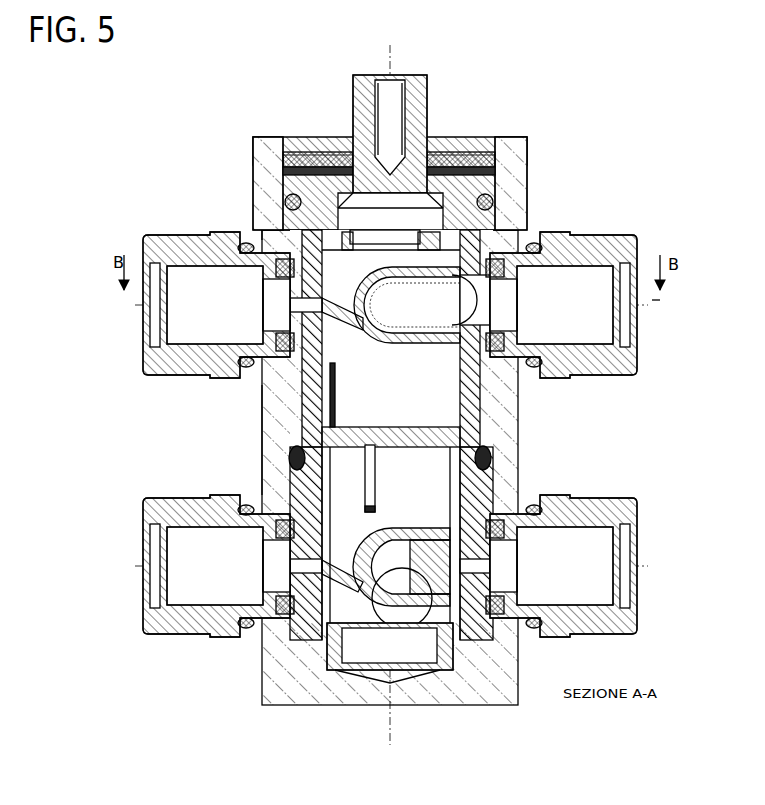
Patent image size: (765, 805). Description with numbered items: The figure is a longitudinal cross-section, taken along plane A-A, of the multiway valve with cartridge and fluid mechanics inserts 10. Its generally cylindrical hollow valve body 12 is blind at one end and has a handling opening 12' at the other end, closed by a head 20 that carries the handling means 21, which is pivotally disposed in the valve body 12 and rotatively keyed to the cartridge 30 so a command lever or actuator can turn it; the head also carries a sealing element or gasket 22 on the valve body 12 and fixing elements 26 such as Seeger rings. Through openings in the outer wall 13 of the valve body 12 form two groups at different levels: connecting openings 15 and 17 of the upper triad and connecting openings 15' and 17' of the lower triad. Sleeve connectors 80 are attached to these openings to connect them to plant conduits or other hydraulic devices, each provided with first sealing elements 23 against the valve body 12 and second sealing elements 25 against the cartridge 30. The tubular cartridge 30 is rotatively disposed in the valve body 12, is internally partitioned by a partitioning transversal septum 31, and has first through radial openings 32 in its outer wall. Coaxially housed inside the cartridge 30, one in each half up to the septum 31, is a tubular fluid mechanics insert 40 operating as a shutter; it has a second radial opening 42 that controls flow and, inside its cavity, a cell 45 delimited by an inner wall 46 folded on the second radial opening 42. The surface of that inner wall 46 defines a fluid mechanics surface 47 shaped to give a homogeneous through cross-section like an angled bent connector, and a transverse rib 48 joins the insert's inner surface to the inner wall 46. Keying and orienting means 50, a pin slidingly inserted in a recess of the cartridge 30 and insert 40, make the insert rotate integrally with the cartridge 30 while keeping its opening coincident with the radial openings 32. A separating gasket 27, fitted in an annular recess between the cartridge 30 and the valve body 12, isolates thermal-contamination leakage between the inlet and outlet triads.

The multiway valve with cartridge and fluid mechanics inserts 10 is at (615, 108).
The valve body 12 is at (344, 499).
The handling opening 12' is at (224, 185).
The outer wall 13 is at (272, 397).
The connecting opening 15 is at (156, 305).
The connecting opening 15' is at (156, 582).
The connecting opening 17 is at (614, 305).
The connecting opening 17' is at (615, 585).
The head 20 is at (452, 160).
The handling means 21 is at (413, 88).
The sealing element 22 is at (268, 200).
The first sealing element 23 is at (240, 246).
The second sealing element 25 is at (280, 263).
The fixing element 26 is at (447, 182).
The separating gasket 27 is at (492, 458).
The cartridge 30 is at (483, 378).
The partitioning transversal septum 31 is at (490, 410).
The first through radial opening 32 is at (460, 305).
The fluid mechanics insert 40 is at (349, 277).
The second radial opening 42 is at (505, 340).
The cell 45 is at (413, 297).
The inner wall 46 is at (404, 343).
The fluid mechanics surface 47 is at (535, 300).
The rib 48 is at (338, 307).
The keying and orienting means 50 is at (367, 502).
The sleeve connector 80 is at (147, 250).